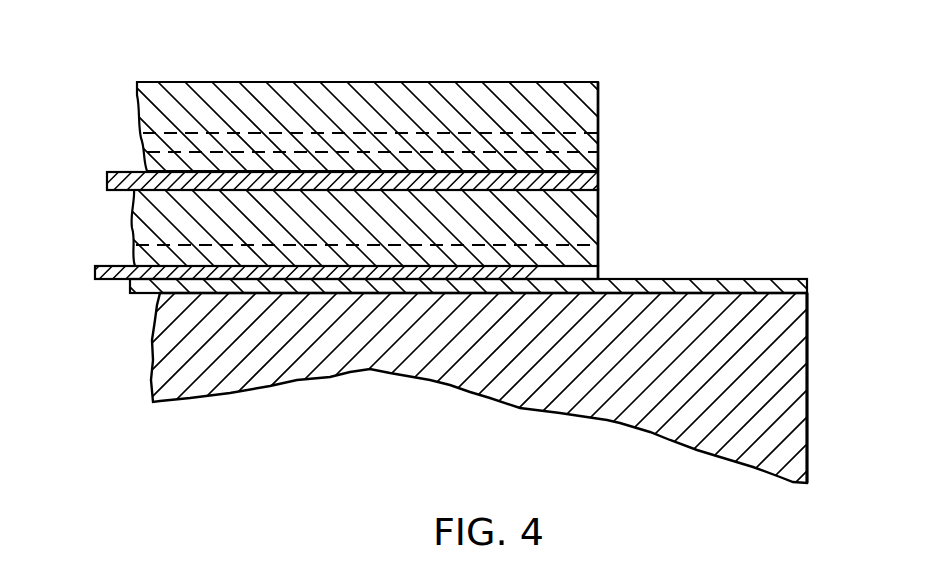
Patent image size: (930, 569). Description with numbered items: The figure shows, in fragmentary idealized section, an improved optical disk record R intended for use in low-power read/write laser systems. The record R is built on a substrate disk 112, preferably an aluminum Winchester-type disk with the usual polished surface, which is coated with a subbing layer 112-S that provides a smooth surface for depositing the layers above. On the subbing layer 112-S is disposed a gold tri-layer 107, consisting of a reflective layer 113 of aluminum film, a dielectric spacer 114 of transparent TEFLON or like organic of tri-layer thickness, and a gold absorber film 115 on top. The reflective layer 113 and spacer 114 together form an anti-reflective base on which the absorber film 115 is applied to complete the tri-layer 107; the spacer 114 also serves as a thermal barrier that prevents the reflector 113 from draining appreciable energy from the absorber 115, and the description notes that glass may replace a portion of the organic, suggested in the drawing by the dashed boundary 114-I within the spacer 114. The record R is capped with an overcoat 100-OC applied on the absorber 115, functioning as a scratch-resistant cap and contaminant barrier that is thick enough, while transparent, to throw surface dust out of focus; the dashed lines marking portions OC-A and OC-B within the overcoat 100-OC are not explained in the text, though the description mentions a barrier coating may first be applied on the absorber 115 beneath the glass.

The overcoat 100-OC is at (290, 92).
The overcoat lower portion OC-A is at (148, 166).
The overcoat upper portion OC-B is at (600, 137).
The gold absorber film 115 is at (600, 181).
The dielectric spacer 114 is at (133, 219).
The photoconductive layer interface 114-I is at (600, 251).
The reflective layer 113 is at (99, 277).
The subbing layer 112-S is at (148, 290).
The substrate disk 112 is at (362, 362).
The gold tri-layer 107 is at (814, 178).
The disk record R is at (666, 64).